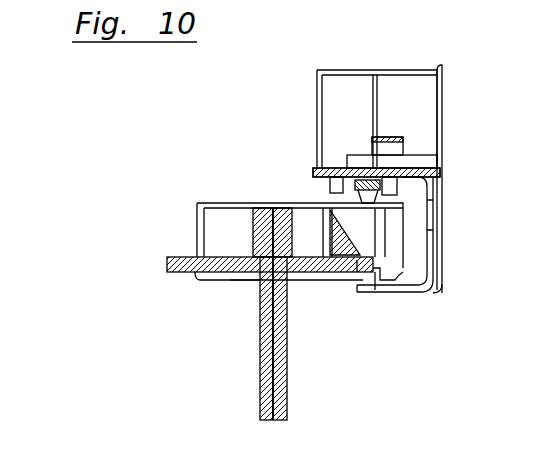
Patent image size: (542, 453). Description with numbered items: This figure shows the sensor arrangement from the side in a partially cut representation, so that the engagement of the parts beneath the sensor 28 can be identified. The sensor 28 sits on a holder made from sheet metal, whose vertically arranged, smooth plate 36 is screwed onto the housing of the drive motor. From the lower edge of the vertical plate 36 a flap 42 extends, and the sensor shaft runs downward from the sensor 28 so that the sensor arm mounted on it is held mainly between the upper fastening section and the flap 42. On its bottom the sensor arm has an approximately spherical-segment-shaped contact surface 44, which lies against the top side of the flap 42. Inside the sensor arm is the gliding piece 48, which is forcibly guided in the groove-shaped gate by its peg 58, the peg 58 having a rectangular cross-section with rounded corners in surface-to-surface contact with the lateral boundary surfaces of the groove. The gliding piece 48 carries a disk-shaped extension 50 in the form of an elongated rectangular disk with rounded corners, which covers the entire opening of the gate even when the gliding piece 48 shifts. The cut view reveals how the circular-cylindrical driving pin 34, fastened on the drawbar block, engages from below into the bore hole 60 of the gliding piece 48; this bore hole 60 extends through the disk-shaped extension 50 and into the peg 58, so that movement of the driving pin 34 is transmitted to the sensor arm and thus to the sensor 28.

The sensor 28 is at (345, 104).
The vertical plate 36 is at (433, 218).
The peg 58 is at (254, 222).
The disk-shaped extension 50 is at (185, 273).
The bore hole 60 is at (258, 287).
The driving pin 34 is at (287, 350).
The gliding piece 48 is at (317, 280).
The contact surface 44 is at (378, 284).
The flap 42 is at (378, 289).